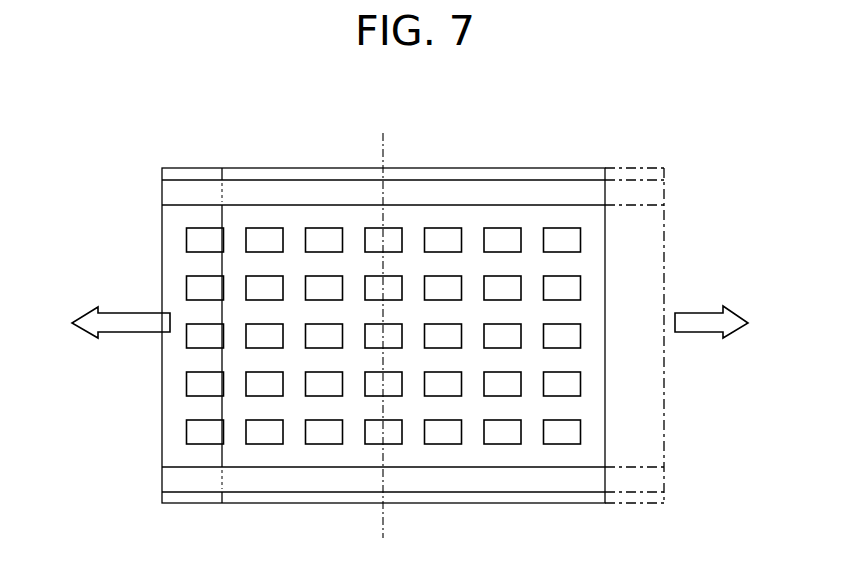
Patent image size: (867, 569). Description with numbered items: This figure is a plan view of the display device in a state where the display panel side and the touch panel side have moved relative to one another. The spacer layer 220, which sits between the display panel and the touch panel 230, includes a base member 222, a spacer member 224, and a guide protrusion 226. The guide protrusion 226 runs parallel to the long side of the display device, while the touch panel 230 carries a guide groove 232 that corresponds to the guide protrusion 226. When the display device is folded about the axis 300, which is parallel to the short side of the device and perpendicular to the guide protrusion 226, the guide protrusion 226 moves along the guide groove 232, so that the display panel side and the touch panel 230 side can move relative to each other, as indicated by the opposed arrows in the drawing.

The spacer layer 220 is at (122, 106).
The base member 222 is at (176, 441).
The spacer member 224 is at (202, 288).
The guide protrusion 226 is at (196, 197).
The touch panel 230 is at (632, 168).
The guide groove 232 is at (657, 191).
The axis 300 is at (385, 133).